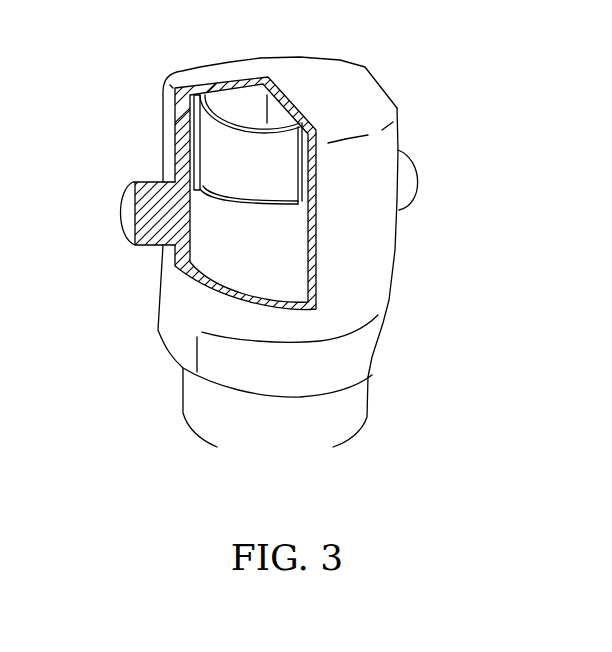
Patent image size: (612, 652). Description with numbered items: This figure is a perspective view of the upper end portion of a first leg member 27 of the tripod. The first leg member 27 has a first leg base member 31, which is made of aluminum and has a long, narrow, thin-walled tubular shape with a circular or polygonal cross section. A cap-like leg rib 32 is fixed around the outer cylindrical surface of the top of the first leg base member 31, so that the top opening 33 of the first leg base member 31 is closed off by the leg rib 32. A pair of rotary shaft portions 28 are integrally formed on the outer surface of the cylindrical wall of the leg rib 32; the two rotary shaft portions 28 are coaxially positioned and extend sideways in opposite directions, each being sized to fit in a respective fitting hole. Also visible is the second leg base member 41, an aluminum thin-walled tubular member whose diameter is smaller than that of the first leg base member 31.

The first leg member 27 is at (428, 389).
The rotary shaft portion 28 is at (134, 182).
The first leg base member 31 is at (277, 245).
The leg rib 32 is at (383, 232).
The top opening 33 is at (197, 105).
The second leg base member 41 is at (247, 153).